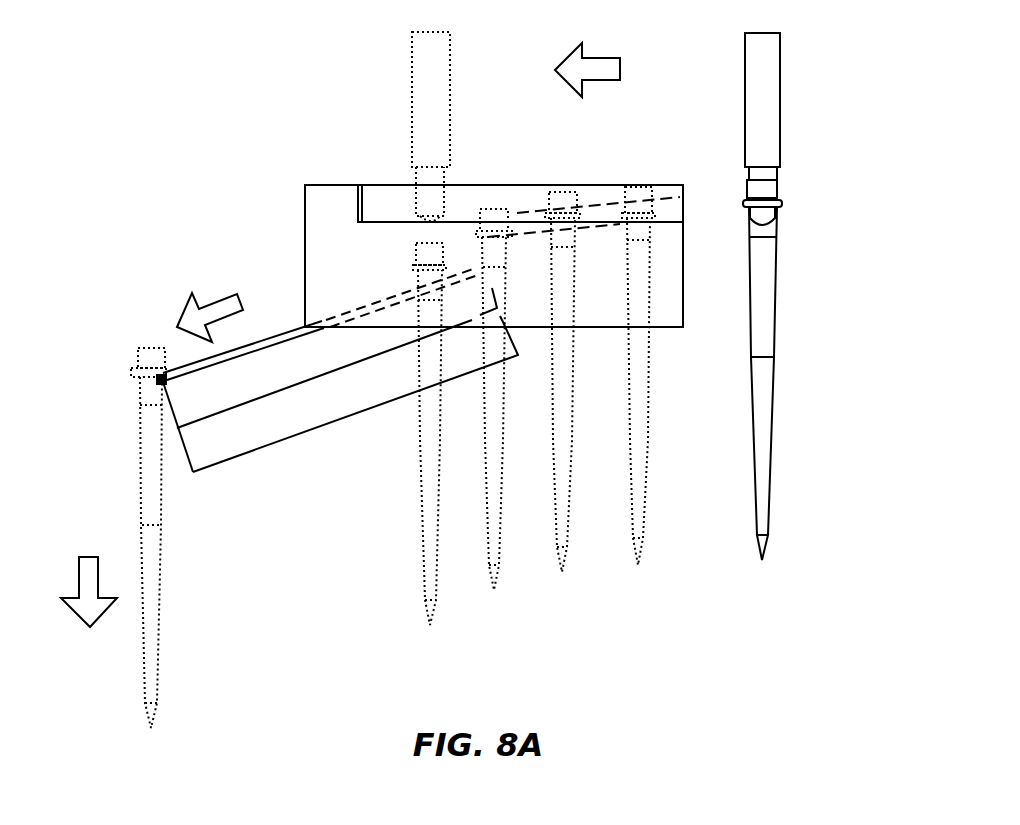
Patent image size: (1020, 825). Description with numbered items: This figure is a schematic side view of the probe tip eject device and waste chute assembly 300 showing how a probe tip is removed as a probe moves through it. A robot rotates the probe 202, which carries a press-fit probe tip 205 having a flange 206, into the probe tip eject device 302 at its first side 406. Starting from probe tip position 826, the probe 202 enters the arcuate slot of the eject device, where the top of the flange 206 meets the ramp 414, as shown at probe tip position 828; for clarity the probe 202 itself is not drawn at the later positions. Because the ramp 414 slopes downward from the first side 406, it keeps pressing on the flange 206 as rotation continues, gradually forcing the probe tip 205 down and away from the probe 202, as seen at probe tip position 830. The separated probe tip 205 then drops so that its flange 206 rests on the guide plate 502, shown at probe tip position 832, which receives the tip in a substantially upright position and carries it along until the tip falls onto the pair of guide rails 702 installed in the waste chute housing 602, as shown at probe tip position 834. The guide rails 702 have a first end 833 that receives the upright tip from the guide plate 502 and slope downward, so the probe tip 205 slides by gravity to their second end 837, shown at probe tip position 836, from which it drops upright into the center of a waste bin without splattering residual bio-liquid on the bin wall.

The probe tip eject device and waste chute assembly 300 is at (250, 125).
The probe 202 is at (783, 113).
The probe tip 205 is at (773, 414).
The flange 206 is at (782, 203).
The probe tip eject device 302 is at (393, 183).
The first side 406 is at (668, 199).
The ramp 414 is at (595, 208).
The guide plate 502 is at (527, 234).
The waste chute housing 602 is at (303, 233).
The pair of guide rails 702 is at (372, 411).
The probe tip position 826 is at (762, 560).
The probe tip position 828 is at (638, 566).
The probe tip position 830 is at (562, 573).
The probe tip position 832 is at (494, 591).
The first end 833 is at (392, 274).
The probe tip position 834 is at (430, 626).
The probe tip position 836 is at (162, 640).
The second end 837 is at (189, 487).